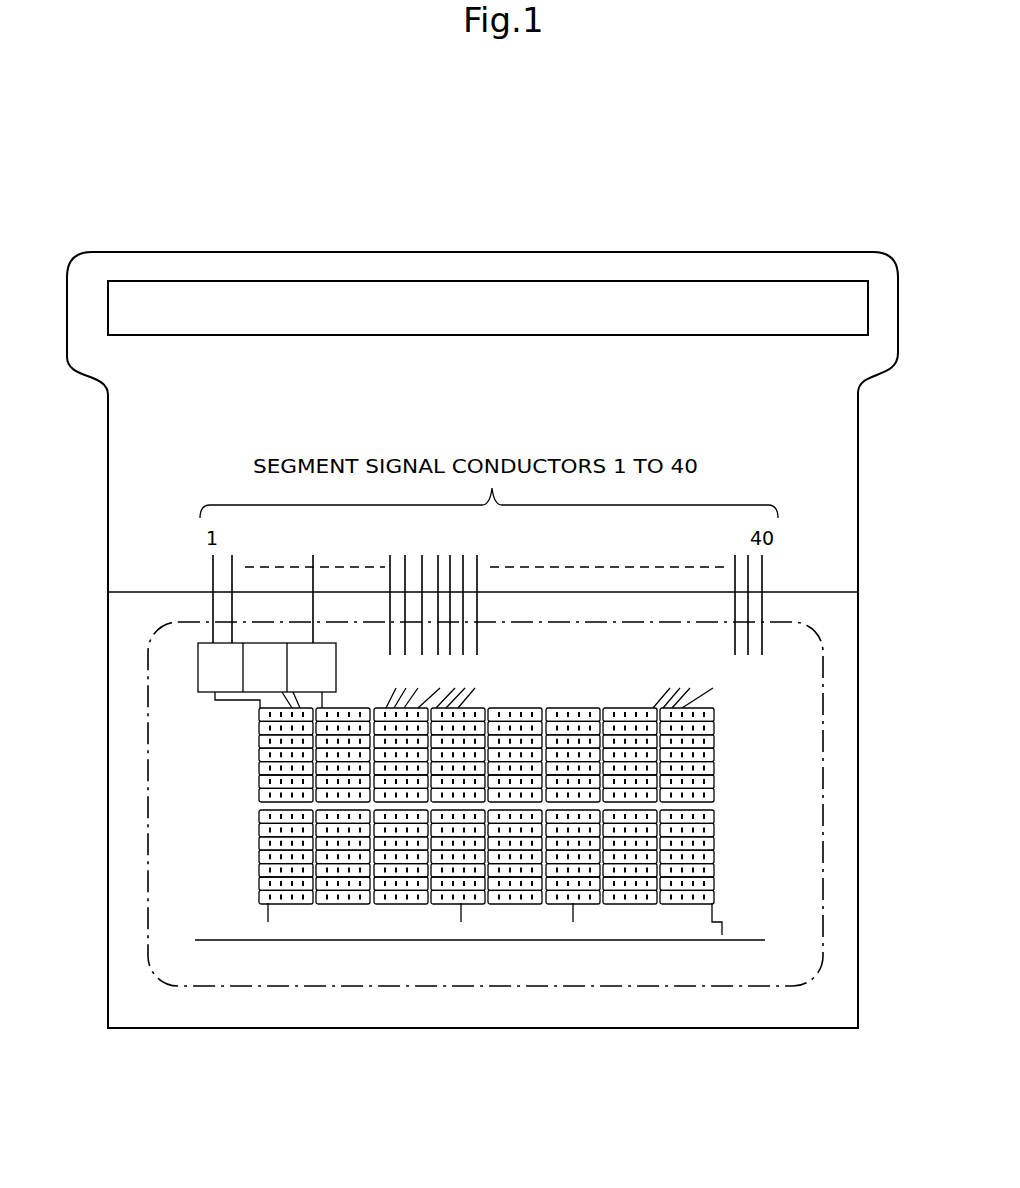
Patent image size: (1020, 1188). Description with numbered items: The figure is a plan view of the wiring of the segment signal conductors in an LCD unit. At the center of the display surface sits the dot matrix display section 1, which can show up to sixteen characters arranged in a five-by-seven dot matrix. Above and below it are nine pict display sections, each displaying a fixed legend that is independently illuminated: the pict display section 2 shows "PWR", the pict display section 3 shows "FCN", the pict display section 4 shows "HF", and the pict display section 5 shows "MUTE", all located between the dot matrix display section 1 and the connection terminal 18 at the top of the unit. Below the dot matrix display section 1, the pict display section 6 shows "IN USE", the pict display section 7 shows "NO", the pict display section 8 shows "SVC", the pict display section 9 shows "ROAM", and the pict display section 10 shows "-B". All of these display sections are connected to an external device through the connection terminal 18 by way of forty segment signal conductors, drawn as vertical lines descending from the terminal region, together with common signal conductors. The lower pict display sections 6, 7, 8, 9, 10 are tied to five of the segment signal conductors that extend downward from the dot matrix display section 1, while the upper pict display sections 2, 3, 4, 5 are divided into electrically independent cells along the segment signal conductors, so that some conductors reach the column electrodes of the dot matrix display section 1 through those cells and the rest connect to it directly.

The dot matrix display section 1 is at (718, 755).
The pict display section 2 is at (210, 663).
The pict display section 3 is at (385, 660).
The pict display section 4 is at (585, 650).
The pict display section 5 is at (775, 657).
The pict display section 6 is at (305, 965).
The pict display section 7 is at (405, 965).
The pict display section 8 is at (520, 963).
The pict display section 9 is at (640, 962).
The pict display section 10 is at (752, 963).
The connection terminal 18 is at (695, 313).